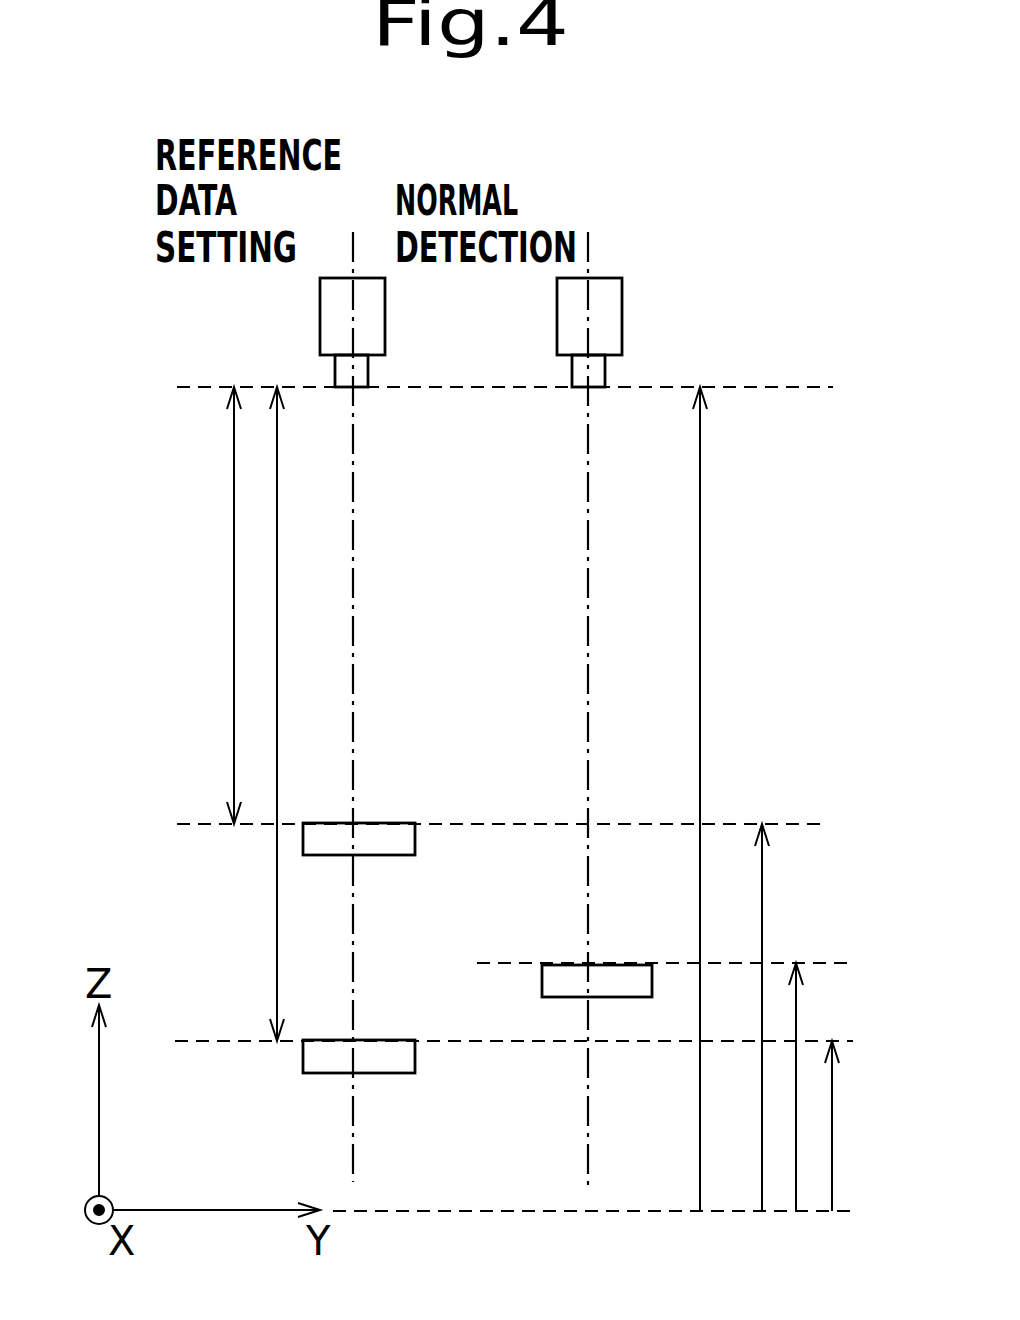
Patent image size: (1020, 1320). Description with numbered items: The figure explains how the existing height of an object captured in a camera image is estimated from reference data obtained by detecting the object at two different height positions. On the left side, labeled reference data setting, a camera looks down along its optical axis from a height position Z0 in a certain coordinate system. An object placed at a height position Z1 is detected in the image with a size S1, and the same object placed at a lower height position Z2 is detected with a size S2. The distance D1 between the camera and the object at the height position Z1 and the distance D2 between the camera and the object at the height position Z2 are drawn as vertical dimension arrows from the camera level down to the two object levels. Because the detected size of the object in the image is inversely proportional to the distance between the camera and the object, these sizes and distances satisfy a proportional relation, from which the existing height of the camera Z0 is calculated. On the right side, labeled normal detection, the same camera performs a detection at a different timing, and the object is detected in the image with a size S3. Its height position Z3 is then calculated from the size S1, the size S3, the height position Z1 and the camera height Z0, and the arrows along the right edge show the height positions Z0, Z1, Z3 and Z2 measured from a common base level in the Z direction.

The size S1 is at (381, 815).
The size S2 is at (382, 1033).
The detected size S3 is at (612, 957).
The distance D1 is at (208, 605).
The distance D2 is at (253, 714).
The existing height of the camera Z0 is at (731, 799).
The height position Z1 is at (788, 1017).
The height position Z2 is at (857, 1126).
The height of the object Z3 is at (821, 1087).